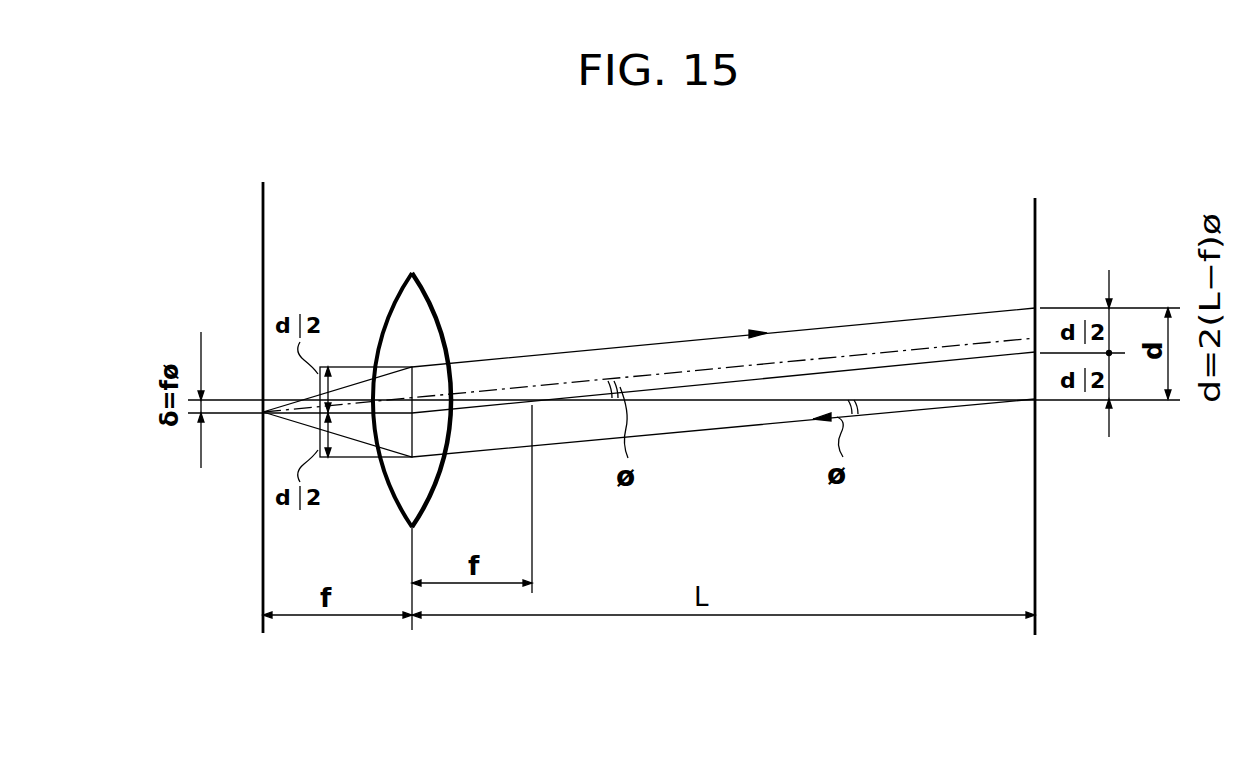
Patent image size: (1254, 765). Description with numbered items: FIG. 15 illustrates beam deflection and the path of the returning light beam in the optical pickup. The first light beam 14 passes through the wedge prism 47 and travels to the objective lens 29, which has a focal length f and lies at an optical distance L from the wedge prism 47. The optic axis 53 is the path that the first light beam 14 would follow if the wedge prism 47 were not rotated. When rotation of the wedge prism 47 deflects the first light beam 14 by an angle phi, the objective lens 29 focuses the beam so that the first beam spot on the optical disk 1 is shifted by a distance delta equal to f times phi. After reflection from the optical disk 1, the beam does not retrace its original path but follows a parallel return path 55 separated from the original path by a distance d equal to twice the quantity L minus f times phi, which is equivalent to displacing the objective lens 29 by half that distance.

The optical disk 1 is at (265, 201).
The first light beam 14 is at (712, 430).
The objective lens 29 is at (423, 281).
The wedge prism 47 is at (1035, 213).
The optic axis 53 is at (790, 402).
The parallel return path 55 is at (715, 333).